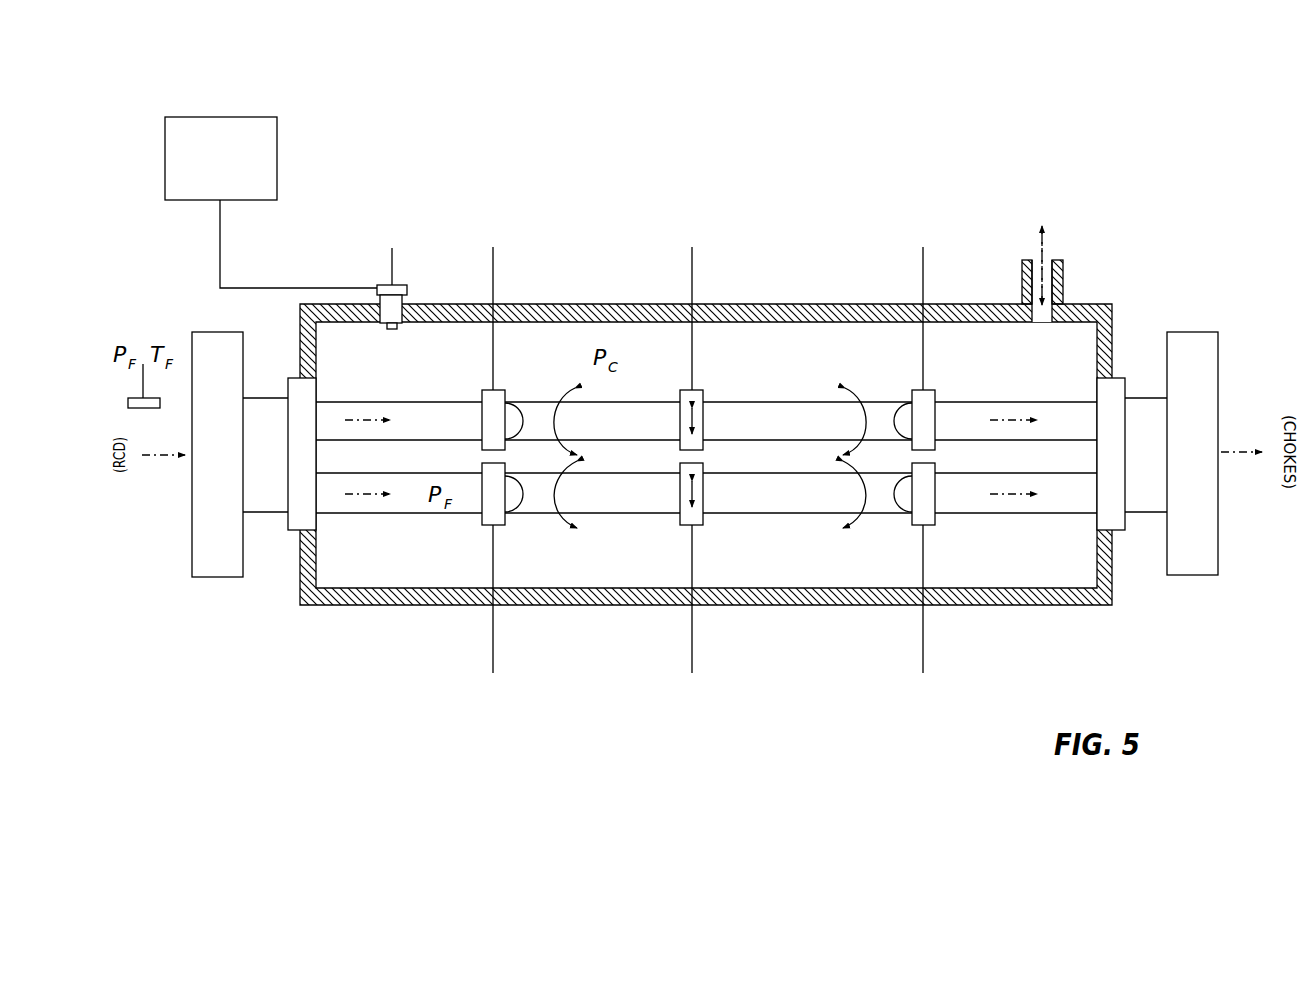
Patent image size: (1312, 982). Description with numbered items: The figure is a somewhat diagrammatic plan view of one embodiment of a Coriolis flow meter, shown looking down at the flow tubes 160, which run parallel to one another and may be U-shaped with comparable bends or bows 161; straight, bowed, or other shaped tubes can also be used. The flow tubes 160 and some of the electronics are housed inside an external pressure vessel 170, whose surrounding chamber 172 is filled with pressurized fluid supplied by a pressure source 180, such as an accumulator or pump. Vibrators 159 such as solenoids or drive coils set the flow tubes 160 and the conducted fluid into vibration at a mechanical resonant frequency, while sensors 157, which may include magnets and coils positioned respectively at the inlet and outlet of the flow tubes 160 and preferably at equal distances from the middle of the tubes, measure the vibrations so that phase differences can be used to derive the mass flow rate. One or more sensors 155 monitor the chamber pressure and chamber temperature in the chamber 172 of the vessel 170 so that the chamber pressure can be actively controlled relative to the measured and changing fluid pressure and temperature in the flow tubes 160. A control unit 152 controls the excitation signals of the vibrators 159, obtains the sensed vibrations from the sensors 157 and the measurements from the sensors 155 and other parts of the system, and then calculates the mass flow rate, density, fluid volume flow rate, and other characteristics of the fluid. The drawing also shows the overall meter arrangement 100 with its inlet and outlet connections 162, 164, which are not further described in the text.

The flow measurement system 100 is at (1128, 144).
The control unit 152 is at (190, 117).
The sensors 155 is at (408, 290).
The sensors 157 is at (716, 448).
The vibrators 159 is at (697, 448).
The flow tubes 160 is at (755, 440).
The bends 161 is at (521, 436).
The inlet flange 162 is at (292, 532).
The outlet flange 164 is at (1121, 532).
The pressure vessel 170 is at (412, 606).
The chamber 172 is at (353, 578).
The pressure source 180 is at (1076, 256).